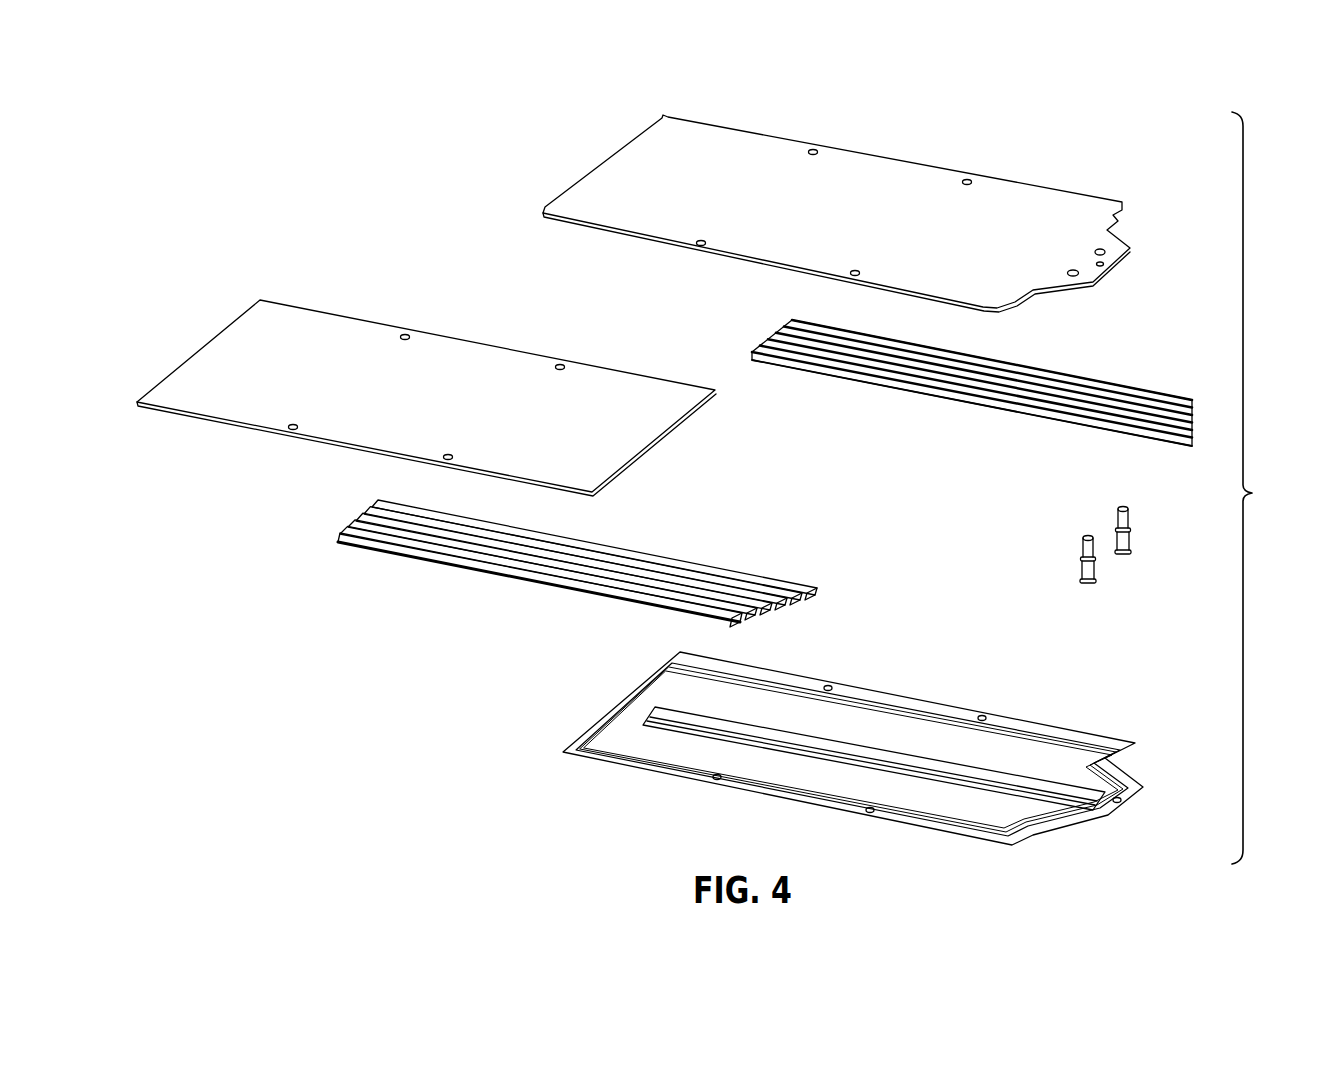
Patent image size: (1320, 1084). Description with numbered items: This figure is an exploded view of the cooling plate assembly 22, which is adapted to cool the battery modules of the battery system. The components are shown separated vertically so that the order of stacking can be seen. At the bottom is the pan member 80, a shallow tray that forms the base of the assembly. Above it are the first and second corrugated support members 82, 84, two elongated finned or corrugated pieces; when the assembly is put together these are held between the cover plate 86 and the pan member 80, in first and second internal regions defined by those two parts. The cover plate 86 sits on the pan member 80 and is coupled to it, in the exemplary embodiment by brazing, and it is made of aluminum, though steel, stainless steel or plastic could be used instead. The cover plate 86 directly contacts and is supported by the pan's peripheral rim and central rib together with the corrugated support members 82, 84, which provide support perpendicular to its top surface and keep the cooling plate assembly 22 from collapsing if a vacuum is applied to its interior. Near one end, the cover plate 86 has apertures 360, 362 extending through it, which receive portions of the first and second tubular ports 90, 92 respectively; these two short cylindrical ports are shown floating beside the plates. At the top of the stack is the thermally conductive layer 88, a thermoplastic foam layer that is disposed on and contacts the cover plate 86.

The cooling plate assembly 22 is at (1259, 488).
The pan member 80 is at (1042, 728).
The first corrugated support member 82 is at (1043, 370).
The second corrugated support member 84 is at (748, 578).
The cover plate 86 is at (1022, 205).
The thermally conductive layer 88 is at (603, 387).
The first tubular port 90 is at (1133, 515).
The second tubular port 92 is at (1082, 545).
The aperture 360 is at (1130, 250).
The aperture 362 is at (1100, 278).